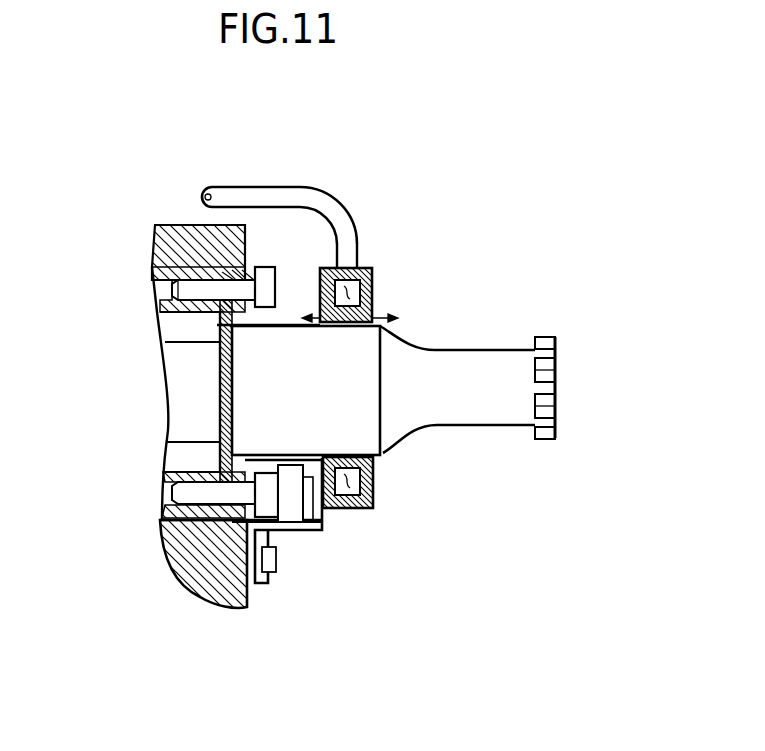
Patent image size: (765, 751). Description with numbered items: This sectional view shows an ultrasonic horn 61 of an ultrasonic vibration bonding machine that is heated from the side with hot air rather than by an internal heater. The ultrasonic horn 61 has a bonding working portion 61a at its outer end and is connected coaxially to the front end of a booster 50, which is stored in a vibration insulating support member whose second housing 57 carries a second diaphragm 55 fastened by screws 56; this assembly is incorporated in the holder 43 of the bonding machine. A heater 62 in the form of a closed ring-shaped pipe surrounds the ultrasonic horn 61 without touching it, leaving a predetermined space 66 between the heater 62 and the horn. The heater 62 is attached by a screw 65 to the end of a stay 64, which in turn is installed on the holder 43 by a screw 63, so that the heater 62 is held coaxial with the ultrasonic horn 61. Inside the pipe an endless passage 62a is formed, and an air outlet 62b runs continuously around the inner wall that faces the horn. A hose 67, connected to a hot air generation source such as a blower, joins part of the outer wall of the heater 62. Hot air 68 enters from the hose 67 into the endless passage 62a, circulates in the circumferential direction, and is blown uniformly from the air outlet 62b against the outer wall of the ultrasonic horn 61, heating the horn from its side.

The holder 43 is at (188, 587).
The booster 50 is at (187, 403).
The second diaphragm 55 is at (221, 353).
The screws 56 is at (277, 268).
The second housing 57 is at (156, 280).
The ultrasonic horn 61 is at (483, 363).
The bonding working portion 61a is at (562, 410).
The heater 62 is at (372, 266).
The endless passage 62a is at (353, 508).
The air outlet 62b is at (373, 490).
The screw 63 is at (259, 578).
The stay 64 is at (288, 532).
The screw 65 is at (305, 522).
The space 66 is at (380, 305).
The hose 67 is at (341, 195).
The hot air 68 is at (352, 268).